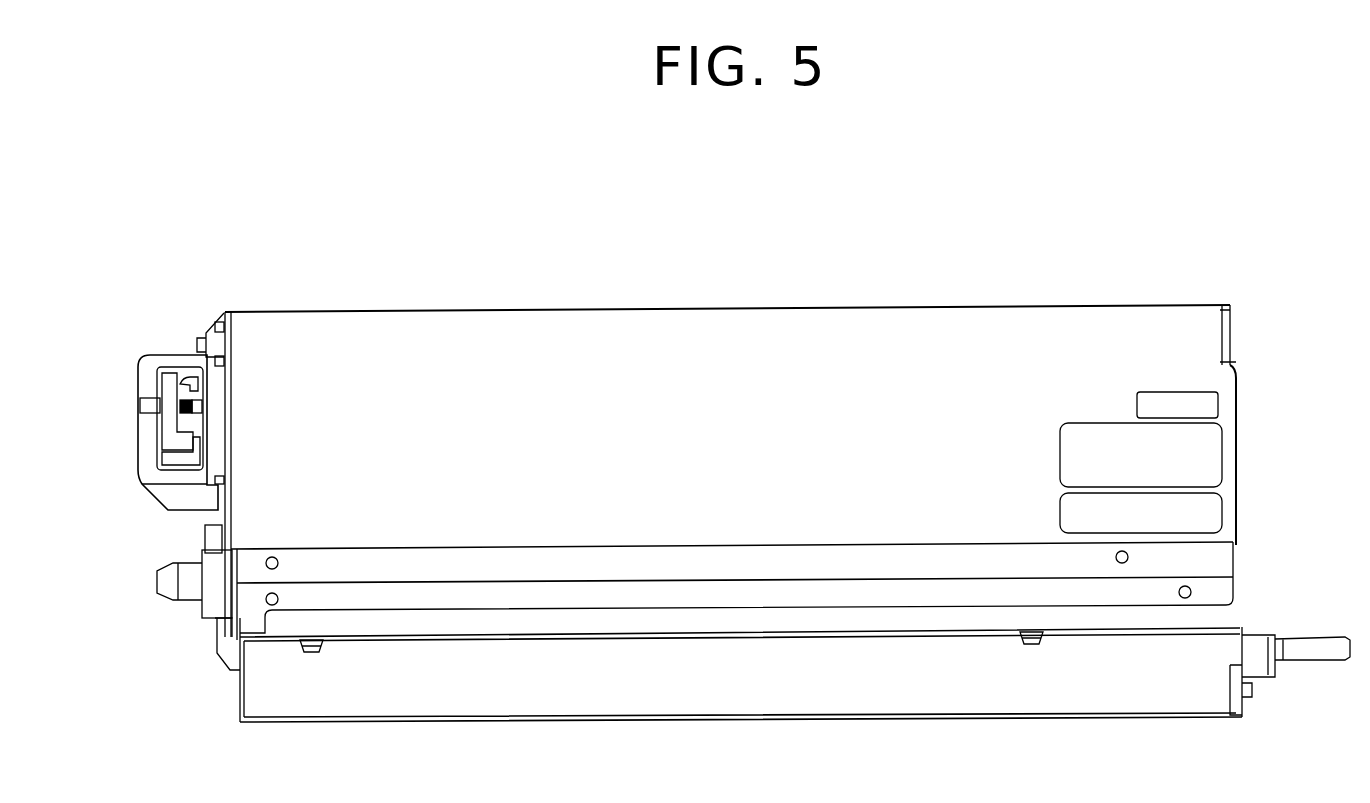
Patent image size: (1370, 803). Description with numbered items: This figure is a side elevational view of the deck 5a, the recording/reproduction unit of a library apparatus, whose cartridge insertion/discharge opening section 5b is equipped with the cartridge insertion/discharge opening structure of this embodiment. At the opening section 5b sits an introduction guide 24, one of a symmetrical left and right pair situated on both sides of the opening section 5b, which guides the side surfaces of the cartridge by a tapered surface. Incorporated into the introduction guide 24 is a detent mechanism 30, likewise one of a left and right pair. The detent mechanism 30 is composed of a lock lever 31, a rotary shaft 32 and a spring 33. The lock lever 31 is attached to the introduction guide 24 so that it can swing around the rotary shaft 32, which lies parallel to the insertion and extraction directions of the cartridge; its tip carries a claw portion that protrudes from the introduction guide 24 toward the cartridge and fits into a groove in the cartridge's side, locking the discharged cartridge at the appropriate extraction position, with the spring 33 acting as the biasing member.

The deck 5a is at (947, 323).
The cartridge insertion/discharge opening section 5b is at (185, 348).
The introduction guide 24 is at (146, 368).
The detent mechanism 30 is at (175, 468).
The lock lever 31 is at (170, 393).
The rotary shaft 32 is at (186, 407).
The spring 33 is at (186, 383).